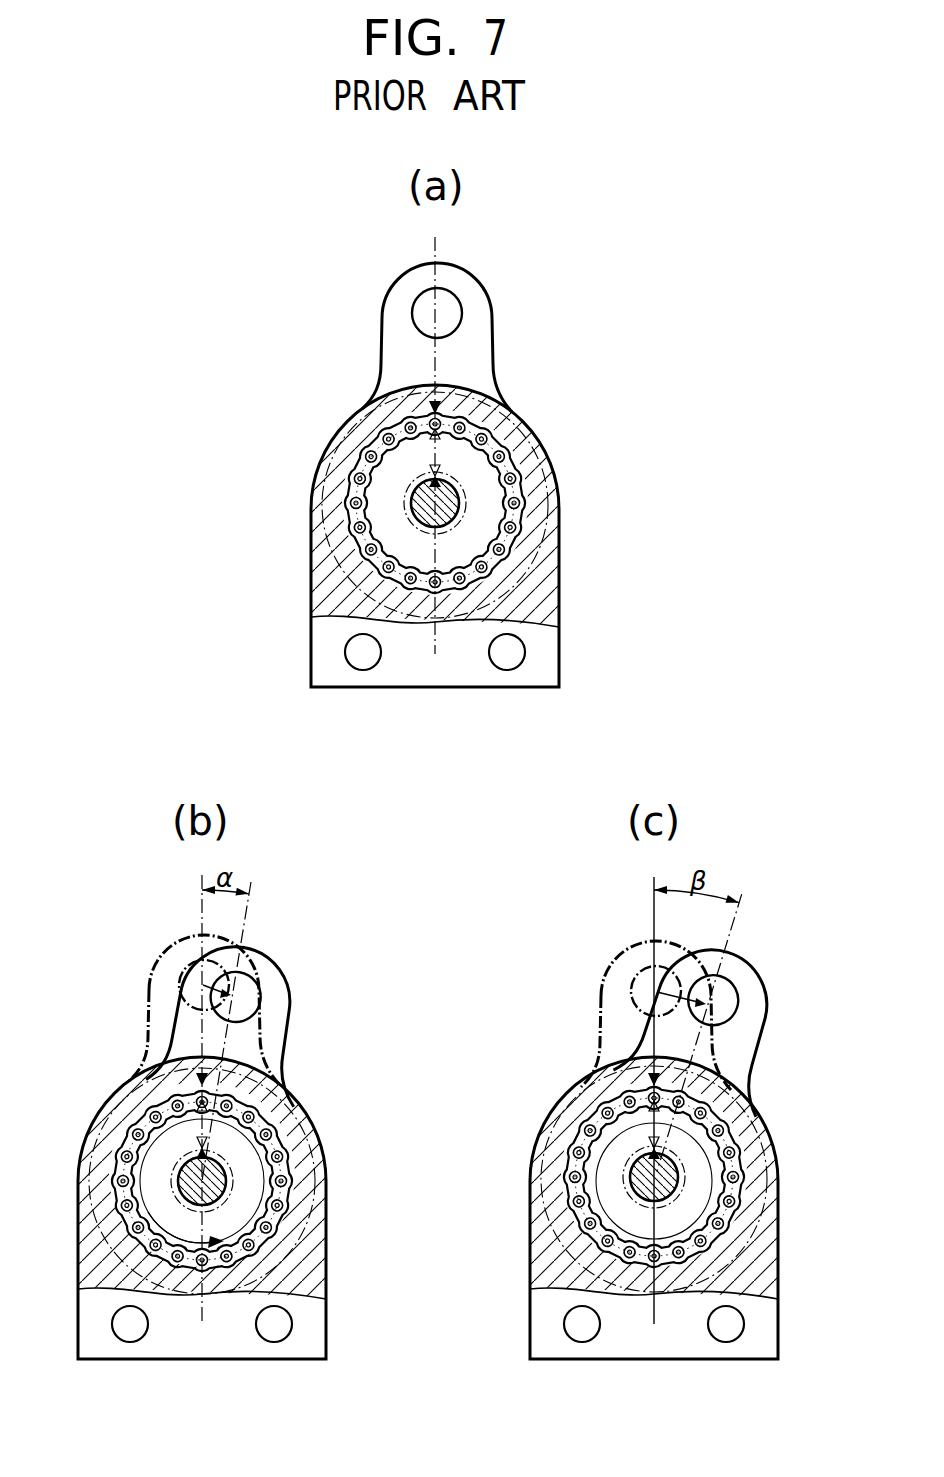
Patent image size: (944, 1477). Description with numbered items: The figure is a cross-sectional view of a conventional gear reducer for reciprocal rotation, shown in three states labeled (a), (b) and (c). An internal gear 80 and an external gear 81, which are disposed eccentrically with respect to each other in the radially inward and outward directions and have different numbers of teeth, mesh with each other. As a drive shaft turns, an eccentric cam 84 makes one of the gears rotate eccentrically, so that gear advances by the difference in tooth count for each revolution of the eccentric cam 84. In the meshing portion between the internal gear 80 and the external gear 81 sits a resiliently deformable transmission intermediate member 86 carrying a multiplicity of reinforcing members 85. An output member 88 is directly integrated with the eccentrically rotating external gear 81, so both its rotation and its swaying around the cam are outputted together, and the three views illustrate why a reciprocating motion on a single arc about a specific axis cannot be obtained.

The internal gear 80 is at (520, 545).
The external gear 81 is at (345, 472).
The eccentric cam 84 is at (442, 506).
The reinforcing members 85 is at (457, 413).
The transmission intermediate member 86 is at (497, 439).
The output member 88 is at (470, 313).